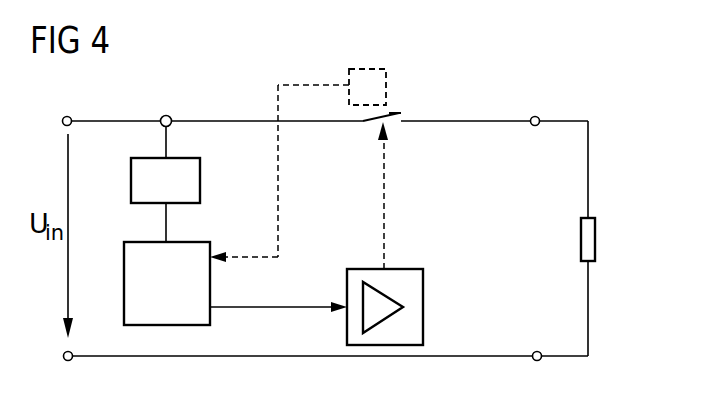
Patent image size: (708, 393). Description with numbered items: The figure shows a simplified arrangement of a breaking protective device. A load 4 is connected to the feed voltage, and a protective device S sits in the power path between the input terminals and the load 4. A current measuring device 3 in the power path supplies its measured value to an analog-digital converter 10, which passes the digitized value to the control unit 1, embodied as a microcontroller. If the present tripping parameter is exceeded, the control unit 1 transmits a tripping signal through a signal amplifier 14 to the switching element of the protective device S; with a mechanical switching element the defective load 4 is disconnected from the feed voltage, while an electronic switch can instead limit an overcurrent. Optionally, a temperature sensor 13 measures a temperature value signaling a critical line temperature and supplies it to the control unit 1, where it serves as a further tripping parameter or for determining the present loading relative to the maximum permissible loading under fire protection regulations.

The control unit 1 is at (210, 290).
The current measuring device 3 is at (164, 115).
The load 4 is at (595, 239).
The analog-digital converter 10 is at (200, 181).
The temperature sensor 13 is at (386, 85).
The signal amplifier 14 is at (423, 307).
The protective device S is at (392, 117).